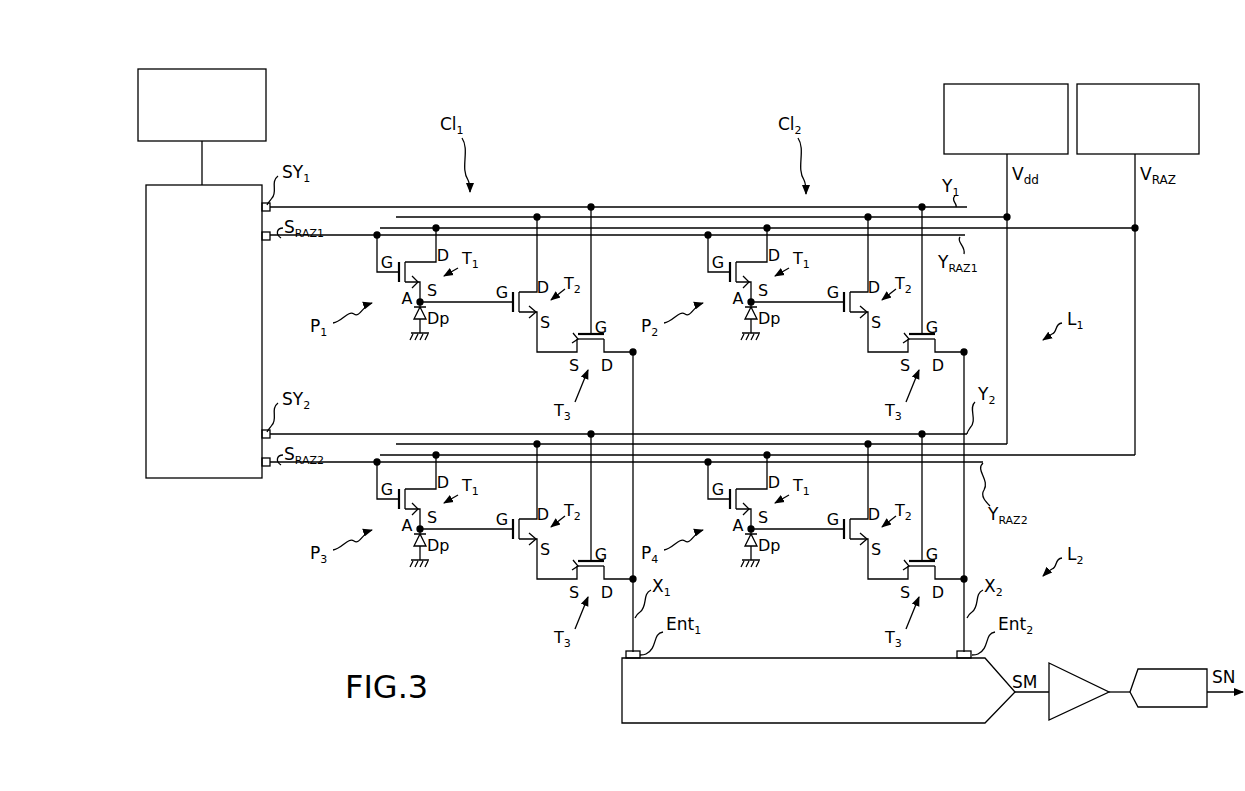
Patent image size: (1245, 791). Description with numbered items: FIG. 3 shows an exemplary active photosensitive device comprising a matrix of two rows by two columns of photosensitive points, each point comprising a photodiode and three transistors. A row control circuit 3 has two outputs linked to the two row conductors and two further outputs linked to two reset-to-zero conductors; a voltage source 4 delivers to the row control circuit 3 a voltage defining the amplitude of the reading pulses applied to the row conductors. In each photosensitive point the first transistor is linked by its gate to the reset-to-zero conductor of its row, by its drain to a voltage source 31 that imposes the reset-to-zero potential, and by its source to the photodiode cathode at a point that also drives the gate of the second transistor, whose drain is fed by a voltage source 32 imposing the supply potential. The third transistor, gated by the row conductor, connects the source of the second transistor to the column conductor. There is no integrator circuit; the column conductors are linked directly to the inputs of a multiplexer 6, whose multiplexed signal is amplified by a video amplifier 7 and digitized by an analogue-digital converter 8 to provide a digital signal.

The row control circuit 3 is at (146, 290).
The voltage source 4 is at (264, 110).
The multiplexer 6 is at (925, 724).
The video amplifier 7 is at (1087, 698).
The analogue-digital converter 8 is at (1167, 708).
The voltage source 31 is at (1096, 84).
The voltage source 32 is at (964, 84).